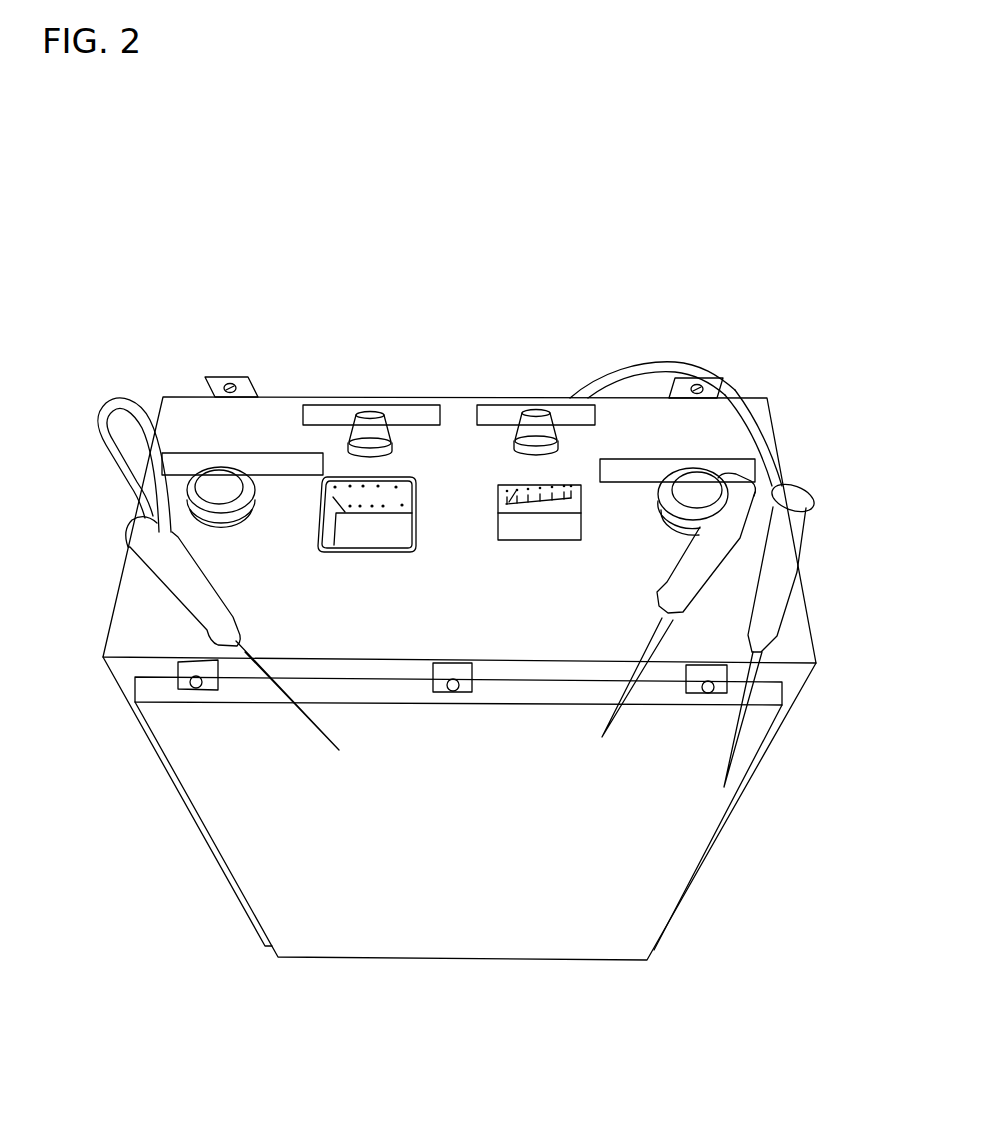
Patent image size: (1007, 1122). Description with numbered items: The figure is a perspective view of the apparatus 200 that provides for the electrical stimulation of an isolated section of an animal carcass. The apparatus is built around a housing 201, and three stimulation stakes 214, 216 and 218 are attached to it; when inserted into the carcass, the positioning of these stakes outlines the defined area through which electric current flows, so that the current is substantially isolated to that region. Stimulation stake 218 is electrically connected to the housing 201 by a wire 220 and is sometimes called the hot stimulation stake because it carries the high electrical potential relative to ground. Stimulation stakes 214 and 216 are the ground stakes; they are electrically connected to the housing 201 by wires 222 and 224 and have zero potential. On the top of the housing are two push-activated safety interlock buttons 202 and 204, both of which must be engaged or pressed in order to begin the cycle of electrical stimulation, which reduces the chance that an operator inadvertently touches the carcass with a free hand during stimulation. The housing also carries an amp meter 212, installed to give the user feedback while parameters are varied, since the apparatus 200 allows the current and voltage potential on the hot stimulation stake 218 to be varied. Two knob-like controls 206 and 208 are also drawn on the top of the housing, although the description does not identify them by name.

The apparatus 200 is at (466, 340).
The housing 201 is at (472, 634).
The push-activated safety interlock button 202 is at (230, 533).
The push-activated safety interlock button 204 is at (663, 515).
The left control knob 206 is at (371, 411).
The right control knob 208 is at (537, 409).
The amp meter 212 is at (535, 542).
The stimulation stake 214 is at (657, 628).
The stimulation stake 216 is at (793, 577).
The stimulation stake 218 is at (122, 535).
The wire 220 is at (110, 453).
The wire 222 is at (736, 392).
The wire 224 is at (747, 420).